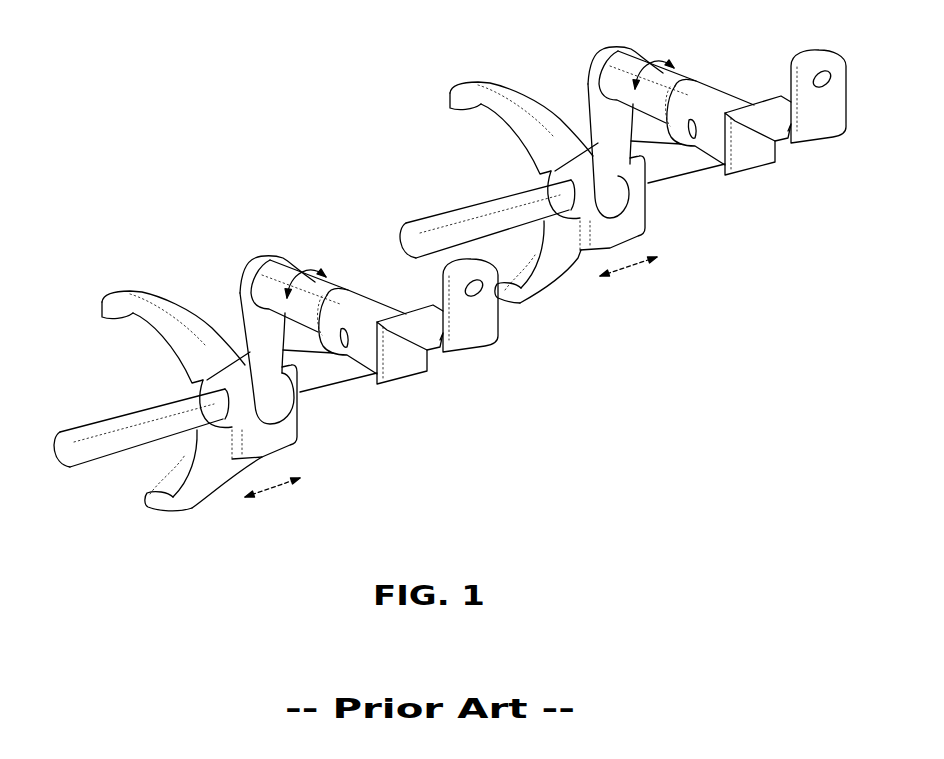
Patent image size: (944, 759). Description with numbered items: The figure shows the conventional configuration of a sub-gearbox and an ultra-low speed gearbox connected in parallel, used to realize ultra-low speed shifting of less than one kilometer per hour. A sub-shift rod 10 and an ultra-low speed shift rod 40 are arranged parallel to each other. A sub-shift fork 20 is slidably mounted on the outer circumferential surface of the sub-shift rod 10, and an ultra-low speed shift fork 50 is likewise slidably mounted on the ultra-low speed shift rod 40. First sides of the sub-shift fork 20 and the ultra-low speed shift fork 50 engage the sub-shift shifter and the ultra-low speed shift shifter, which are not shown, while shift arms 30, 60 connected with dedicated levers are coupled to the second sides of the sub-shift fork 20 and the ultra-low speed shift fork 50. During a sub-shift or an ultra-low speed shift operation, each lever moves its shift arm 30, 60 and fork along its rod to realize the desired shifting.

The sub-shift rod 10 is at (457, 195).
The sub-shift fork 20 is at (505, 85).
The shift arm 30 is at (625, 125).
The ultra-low speed shift rod 40 is at (105, 432).
The ultra-low speed shift fork 50 is at (170, 305).
The shift arm 60 is at (243, 262).